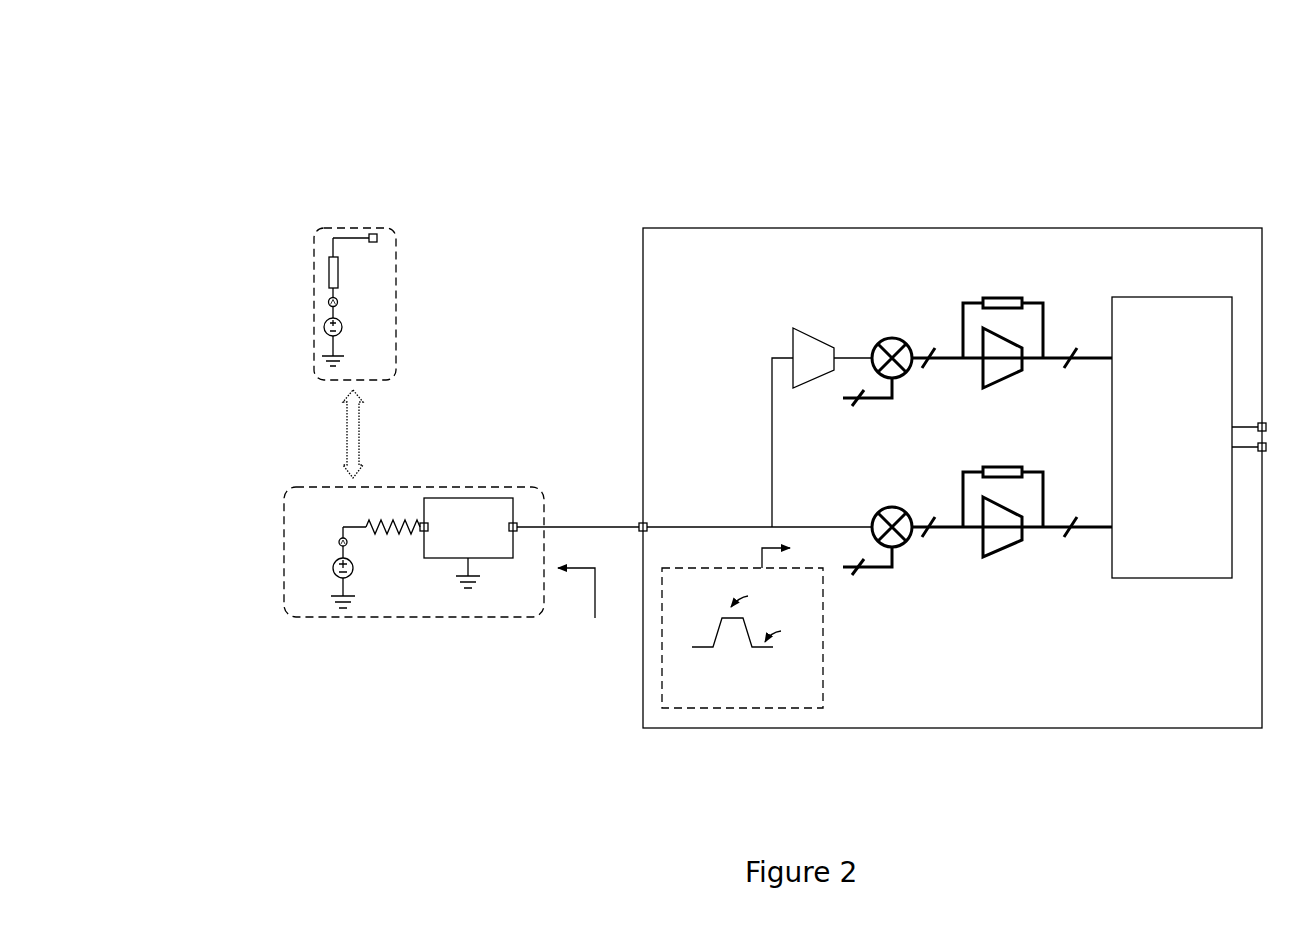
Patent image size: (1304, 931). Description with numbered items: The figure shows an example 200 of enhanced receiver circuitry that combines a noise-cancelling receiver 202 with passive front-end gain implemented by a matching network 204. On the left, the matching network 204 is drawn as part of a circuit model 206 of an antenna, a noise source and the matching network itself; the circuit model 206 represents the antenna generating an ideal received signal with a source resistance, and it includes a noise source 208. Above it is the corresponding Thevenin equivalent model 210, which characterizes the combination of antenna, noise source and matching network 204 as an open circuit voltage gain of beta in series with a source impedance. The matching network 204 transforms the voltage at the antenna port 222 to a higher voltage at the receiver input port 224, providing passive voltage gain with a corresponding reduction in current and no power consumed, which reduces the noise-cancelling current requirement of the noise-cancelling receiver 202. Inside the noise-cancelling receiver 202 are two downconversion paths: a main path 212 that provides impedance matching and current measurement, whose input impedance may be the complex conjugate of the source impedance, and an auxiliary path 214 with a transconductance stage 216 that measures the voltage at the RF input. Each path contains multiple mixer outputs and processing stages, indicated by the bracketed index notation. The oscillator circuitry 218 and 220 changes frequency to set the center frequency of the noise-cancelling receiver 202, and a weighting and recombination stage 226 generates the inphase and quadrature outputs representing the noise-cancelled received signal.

The example of enhanced receiver circuitry 200 is at (178, 104).
The noise-cancelling receiver 202 is at (963, 478).
The matching network 204 is at (437, 556).
The circuit model 206 is at (414, 552).
The noise source 208 is at (339, 545).
The Thevenin equivalent model 210 is at (314, 320).
The main path 212 is at (953, 523).
The auxiliary path 214 is at (914, 402).
The transconductance stage 216 is at (811, 341).
The oscillator circuitry 218 is at (894, 339).
The oscillator circuitry 220 is at (894, 508).
The antenna port 222 is at (420, 532).
The receiver input port 224 is at (638, 532).
The weighting and recombination stage 226 is at (1197, 437).